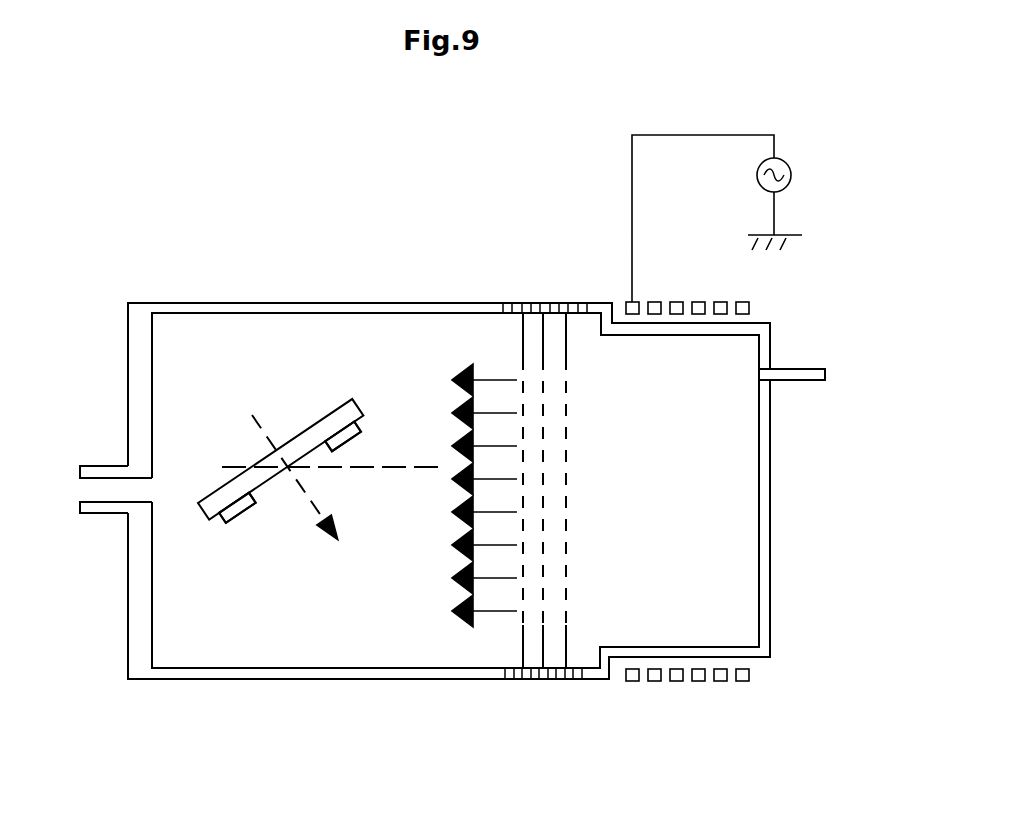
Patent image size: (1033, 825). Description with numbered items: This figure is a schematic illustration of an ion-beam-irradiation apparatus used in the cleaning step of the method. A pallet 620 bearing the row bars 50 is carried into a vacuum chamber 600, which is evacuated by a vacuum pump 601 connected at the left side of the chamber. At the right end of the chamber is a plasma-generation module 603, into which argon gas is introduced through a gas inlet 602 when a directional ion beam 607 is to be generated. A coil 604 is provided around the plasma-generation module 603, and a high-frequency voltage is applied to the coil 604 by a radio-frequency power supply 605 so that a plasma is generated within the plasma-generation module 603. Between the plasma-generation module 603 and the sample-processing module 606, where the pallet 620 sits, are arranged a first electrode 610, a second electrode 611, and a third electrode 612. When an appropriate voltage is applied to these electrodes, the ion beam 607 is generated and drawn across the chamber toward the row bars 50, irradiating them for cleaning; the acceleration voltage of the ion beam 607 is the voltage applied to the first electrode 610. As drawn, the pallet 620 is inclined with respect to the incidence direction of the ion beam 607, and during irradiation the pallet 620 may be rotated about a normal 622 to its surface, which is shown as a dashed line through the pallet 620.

The vacuum chamber 600 is at (247, 302).
The vacuum pump 601 is at (105, 487).
The gas inlet 602 is at (798, 380).
The plasma-generation module 603 is at (684, 500).
The coil 604 is at (670, 300).
The radio-frequency (RF) power supply 605 is at (738, 217).
The sample-processing module 606 is at (247, 643).
The ion beam 607 is at (498, 380).
The first electrode 610 is at (567, 563).
The second electrode 611 is at (541, 643).
The third electrode 612 is at (523, 638).
The pallet 620 is at (327, 427).
The normal 622 is at (276, 444).
The row bars 50 is at (366, 427).